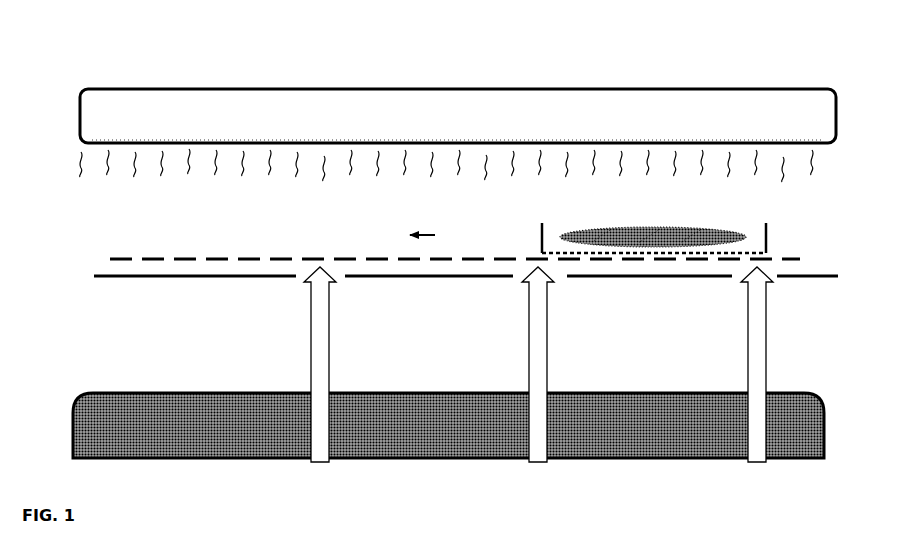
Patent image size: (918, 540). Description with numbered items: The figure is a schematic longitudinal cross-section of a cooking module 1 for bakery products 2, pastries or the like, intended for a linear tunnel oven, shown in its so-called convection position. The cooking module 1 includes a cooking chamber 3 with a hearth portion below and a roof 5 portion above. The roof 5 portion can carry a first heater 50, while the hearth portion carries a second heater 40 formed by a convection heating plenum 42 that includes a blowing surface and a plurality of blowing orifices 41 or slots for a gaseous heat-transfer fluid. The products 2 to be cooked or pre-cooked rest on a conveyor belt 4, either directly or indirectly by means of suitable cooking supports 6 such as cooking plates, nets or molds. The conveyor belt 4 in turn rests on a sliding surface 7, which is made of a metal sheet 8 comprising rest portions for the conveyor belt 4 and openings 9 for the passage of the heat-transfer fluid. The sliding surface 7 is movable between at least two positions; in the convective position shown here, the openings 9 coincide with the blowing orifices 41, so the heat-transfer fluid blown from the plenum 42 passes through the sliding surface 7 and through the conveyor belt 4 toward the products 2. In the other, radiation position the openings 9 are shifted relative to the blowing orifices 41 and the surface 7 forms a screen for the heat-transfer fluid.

The cooking module 1 is at (448, 115).
The bakery products 2 is at (650, 222).
The cooking chamber 3 is at (90, 212).
The conveyor belt 4 is at (118, 256).
The roof 5 is at (731, 140).
The cooking supports 6 is at (770, 232).
The sliding surface 7 is at (446, 324).
The metal sheet 8 is at (643, 282).
The openings 9 is at (530, 264).
The second heater 40 is at (431, 403).
The blowing orifices 41 is at (333, 400).
The convection heating plenum 42 is at (144, 400).
The first heater 50 is at (837, 112).